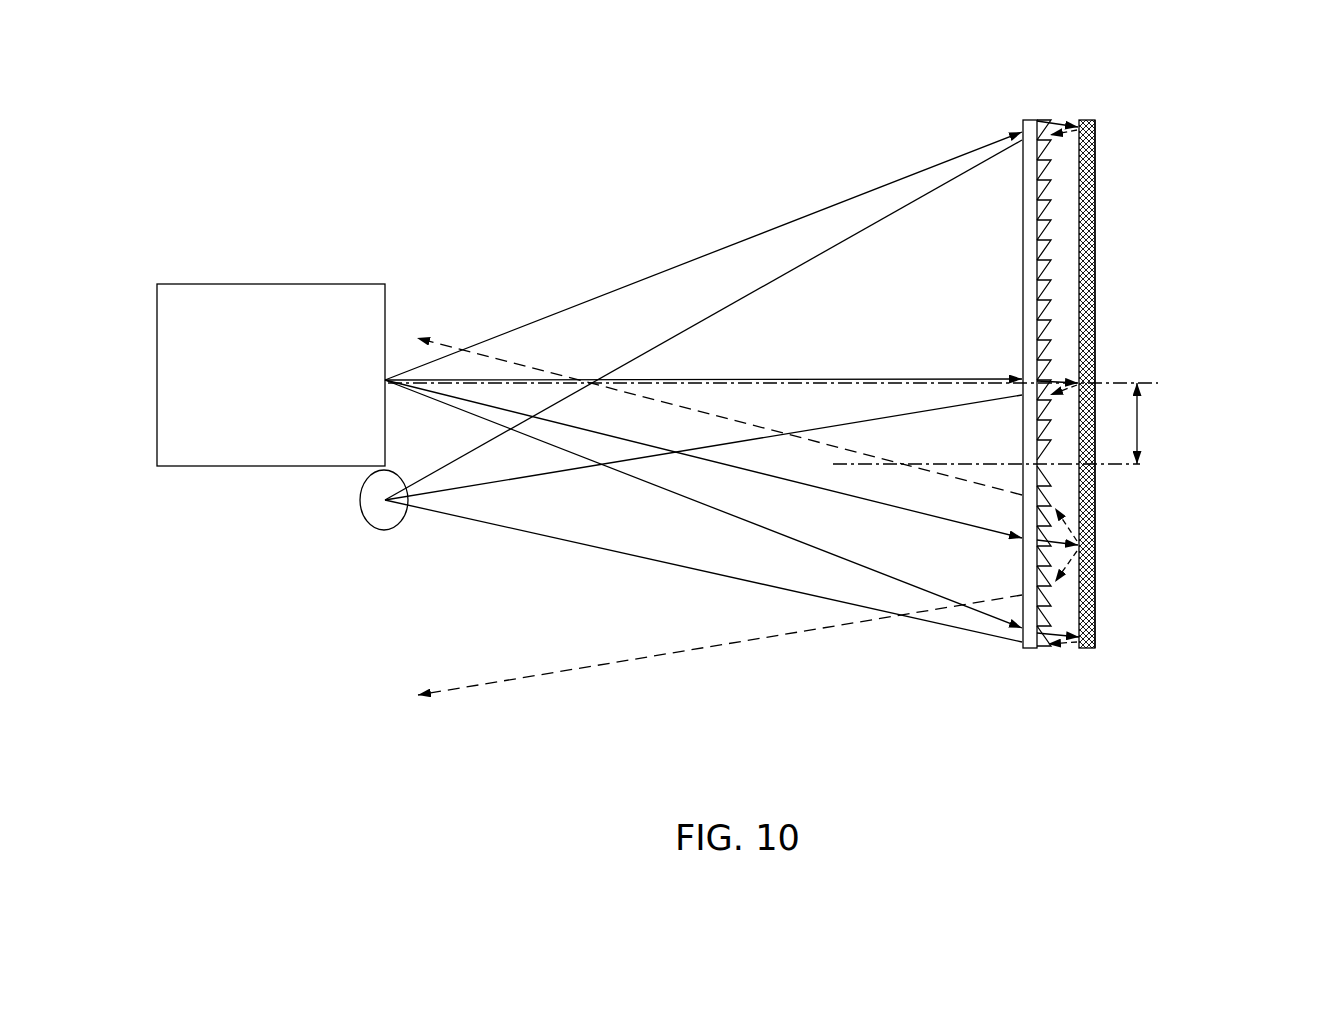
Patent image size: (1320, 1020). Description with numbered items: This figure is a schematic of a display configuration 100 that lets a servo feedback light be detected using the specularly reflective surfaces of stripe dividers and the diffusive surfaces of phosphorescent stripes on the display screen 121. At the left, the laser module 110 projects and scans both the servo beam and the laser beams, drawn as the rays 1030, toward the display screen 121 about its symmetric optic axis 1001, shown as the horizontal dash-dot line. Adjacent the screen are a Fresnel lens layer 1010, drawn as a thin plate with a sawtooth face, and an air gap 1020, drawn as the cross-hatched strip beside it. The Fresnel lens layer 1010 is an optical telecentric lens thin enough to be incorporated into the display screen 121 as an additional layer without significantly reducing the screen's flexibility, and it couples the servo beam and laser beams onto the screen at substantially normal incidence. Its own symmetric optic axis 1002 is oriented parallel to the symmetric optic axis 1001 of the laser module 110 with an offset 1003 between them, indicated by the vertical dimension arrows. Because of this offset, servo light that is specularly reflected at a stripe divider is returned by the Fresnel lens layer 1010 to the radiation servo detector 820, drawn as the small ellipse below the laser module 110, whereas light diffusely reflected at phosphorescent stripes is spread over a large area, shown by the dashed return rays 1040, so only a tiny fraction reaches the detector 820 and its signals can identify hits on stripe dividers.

The heads-up display system 100 is at (377, 125).
The laser module 110 is at (249, 418).
The display screen 121 is at (1095, 160).
The radiation servo detector 820 is at (370, 510).
The symmetric optic axis 1001 is at (795, 378).
The symmetric optic axis 1002 is at (1123, 466).
The offset 1003 is at (1138, 422).
The Fresnel lens layer 1010 is at (1032, 650).
The air gap 1020 is at (1065, 650).
The incident light rays 1030 is at (862, 228).
The reflected light rays 1040 is at (455, 347).